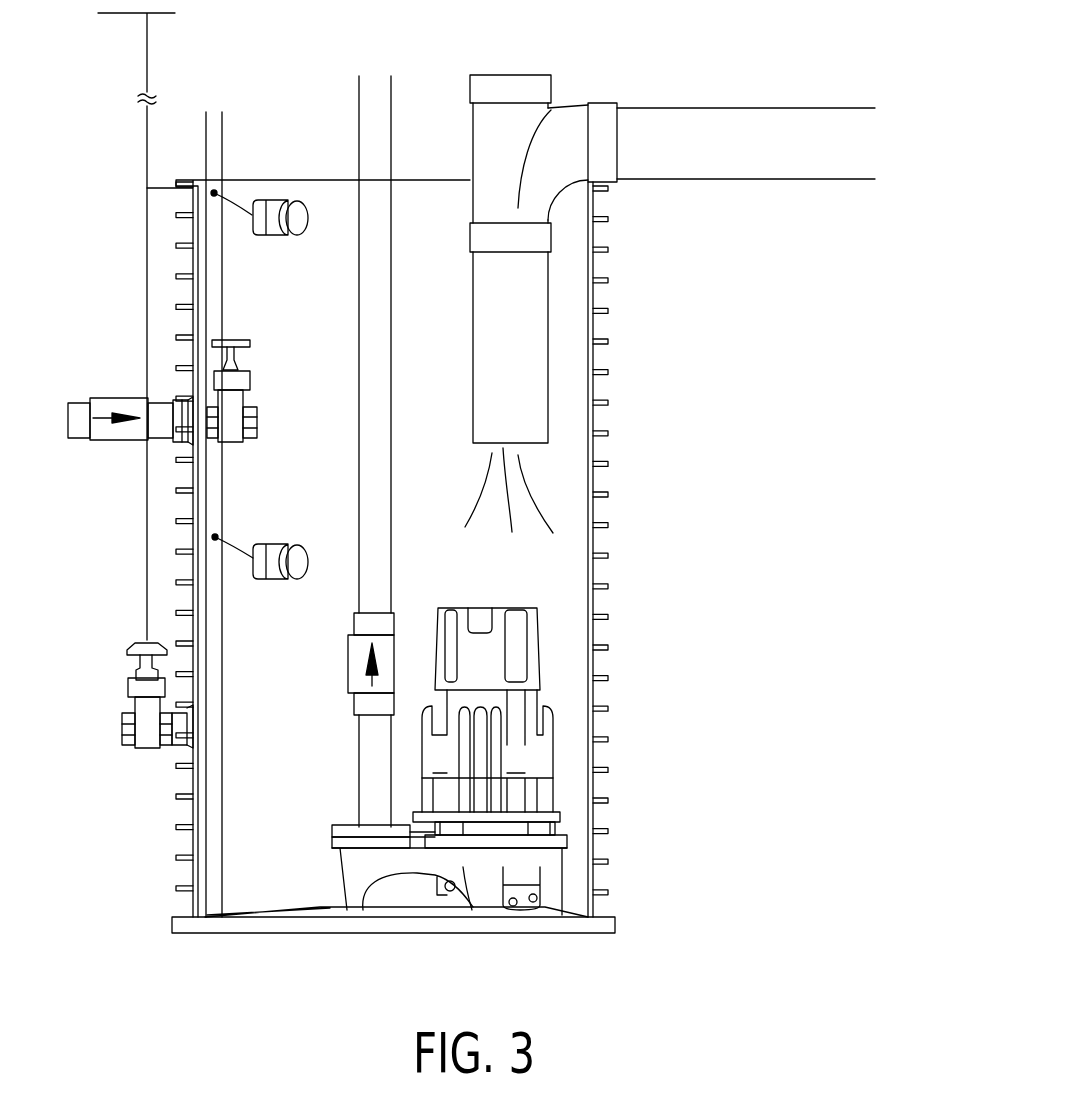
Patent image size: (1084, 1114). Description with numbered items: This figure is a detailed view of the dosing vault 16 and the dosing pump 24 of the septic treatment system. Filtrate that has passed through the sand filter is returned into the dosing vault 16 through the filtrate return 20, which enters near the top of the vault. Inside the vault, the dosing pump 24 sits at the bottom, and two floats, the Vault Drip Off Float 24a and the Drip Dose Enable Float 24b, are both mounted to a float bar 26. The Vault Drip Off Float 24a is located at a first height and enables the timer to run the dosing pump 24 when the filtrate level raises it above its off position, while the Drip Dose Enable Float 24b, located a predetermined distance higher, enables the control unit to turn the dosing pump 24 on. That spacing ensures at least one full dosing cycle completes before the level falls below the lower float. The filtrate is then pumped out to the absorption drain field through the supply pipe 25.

The dosing vault 16 is at (594, 413).
The filtrate return 20 is at (744, 173).
The dosing pump 24 is at (510, 600).
The Vault Drip Off Float 24a is at (278, 580).
The Drip Dose Enable Float 24b is at (272, 236).
The supply pipe 25 is at (223, 490).
The float bar 26 is at (391, 440).